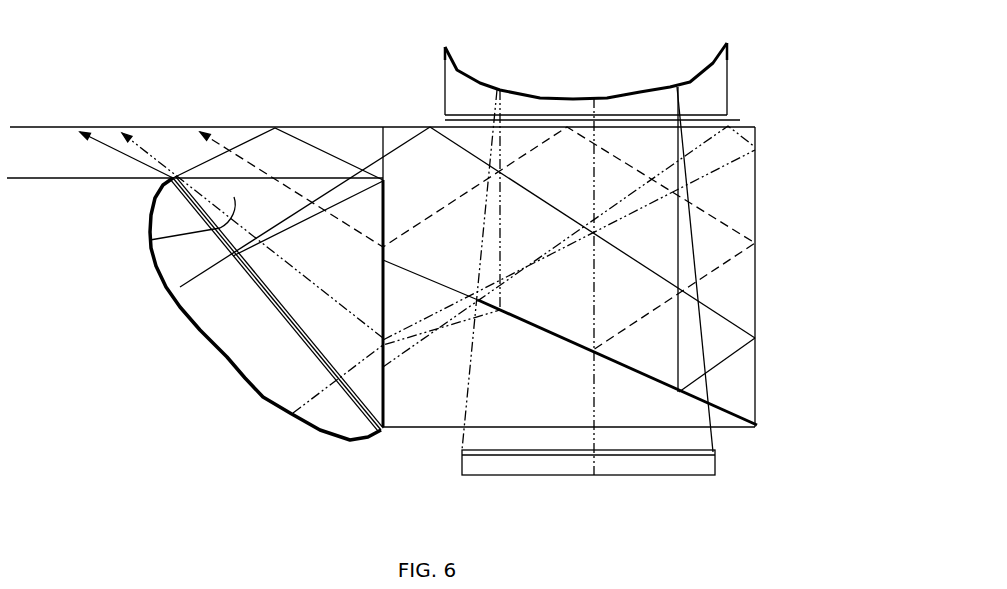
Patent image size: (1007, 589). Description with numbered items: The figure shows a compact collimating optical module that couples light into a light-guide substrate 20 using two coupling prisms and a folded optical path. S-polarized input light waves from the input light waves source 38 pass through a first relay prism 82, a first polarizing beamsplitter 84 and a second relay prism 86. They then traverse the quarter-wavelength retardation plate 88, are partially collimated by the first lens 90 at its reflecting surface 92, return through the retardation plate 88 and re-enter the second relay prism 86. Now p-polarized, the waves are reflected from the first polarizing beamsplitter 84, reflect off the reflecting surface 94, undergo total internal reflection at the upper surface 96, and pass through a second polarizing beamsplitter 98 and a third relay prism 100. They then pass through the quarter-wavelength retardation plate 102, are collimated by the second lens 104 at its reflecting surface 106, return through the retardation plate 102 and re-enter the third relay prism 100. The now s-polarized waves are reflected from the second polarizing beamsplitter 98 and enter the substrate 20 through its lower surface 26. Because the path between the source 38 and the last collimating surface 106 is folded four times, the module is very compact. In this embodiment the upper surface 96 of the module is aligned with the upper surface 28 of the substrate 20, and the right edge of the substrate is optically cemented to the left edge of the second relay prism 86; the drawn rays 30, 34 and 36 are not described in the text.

The substrate 20 is at (48, 162).
The lower surface 26 is at (7, 180).
The upper surface 28 is at (167, 125).
The light ray 30 is at (213, 127).
The prism 34 is at (318, 147).
The light ray 36 is at (107, 123).
The input light waves source 38 is at (615, 476).
The first relay prism 82 is at (685, 413).
The first polarizing beamsplitter 84 is at (724, 413).
The second relay prism 86 is at (410, 150).
The quarter-wavelength retardation plate 88 is at (738, 117).
The first lens 90 is at (557, 108).
The reflecting surface 92 is at (625, 95).
The reflecting surface 94 is at (755, 173).
The upper surface 96 is at (420, 127).
The second polarizing beamsplitter 98 is at (400, 378).
The third relay prism 100 is at (157, 242).
The quarter-wavelength retardation plate 102 is at (383, 433).
The second lens 104 is at (270, 372).
The reflecting surface 106 is at (205, 337).